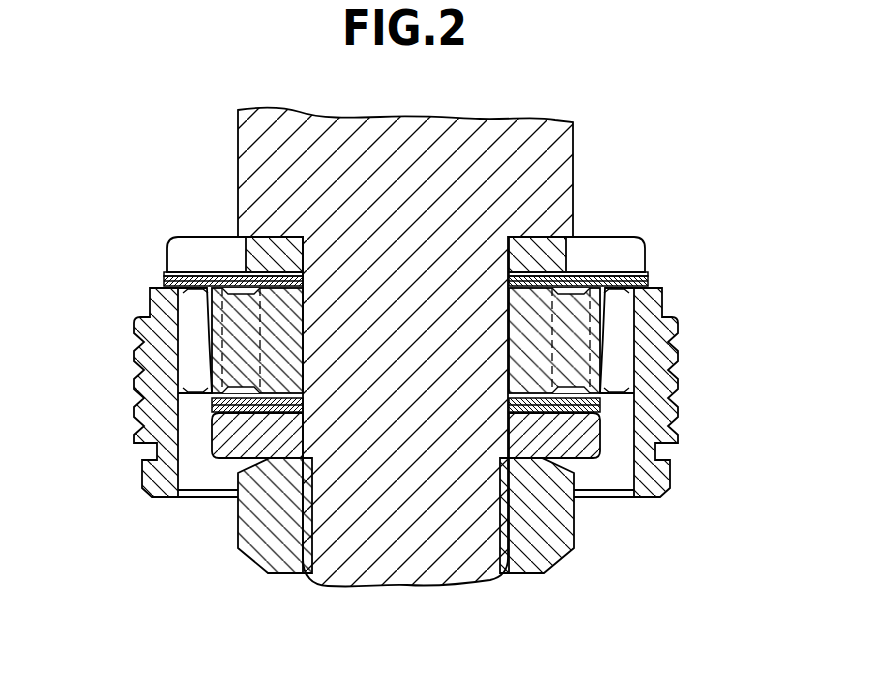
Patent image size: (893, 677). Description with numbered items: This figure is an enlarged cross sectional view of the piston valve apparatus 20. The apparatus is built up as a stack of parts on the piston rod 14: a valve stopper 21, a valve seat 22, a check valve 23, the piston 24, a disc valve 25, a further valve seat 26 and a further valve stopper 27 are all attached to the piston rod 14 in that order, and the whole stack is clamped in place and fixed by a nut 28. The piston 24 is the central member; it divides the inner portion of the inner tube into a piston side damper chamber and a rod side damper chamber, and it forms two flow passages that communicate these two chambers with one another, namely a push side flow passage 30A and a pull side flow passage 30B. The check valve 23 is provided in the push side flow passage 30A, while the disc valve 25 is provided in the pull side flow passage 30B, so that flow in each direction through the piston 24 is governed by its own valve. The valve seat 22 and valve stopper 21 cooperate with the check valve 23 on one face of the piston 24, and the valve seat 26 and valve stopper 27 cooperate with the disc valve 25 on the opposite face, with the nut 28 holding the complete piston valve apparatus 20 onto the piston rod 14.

The piston rod 14 is at (267, 160).
The piston valve apparatus 20 is at (398, 361).
The valve stopper 21 is at (597, 237).
The valve seat 22 is at (515, 262).
The check valve 23 is at (648, 281).
The piston 24 is at (645, 303).
The disc valve 25 is at (600, 403).
The valve seat 26 is at (533, 417).
The valve stopper 27 is at (588, 452).
The nut 28 is at (557, 523).
The push side flow passage 30A is at (636, 333).
The pull side flow passage 30B is at (205, 340).